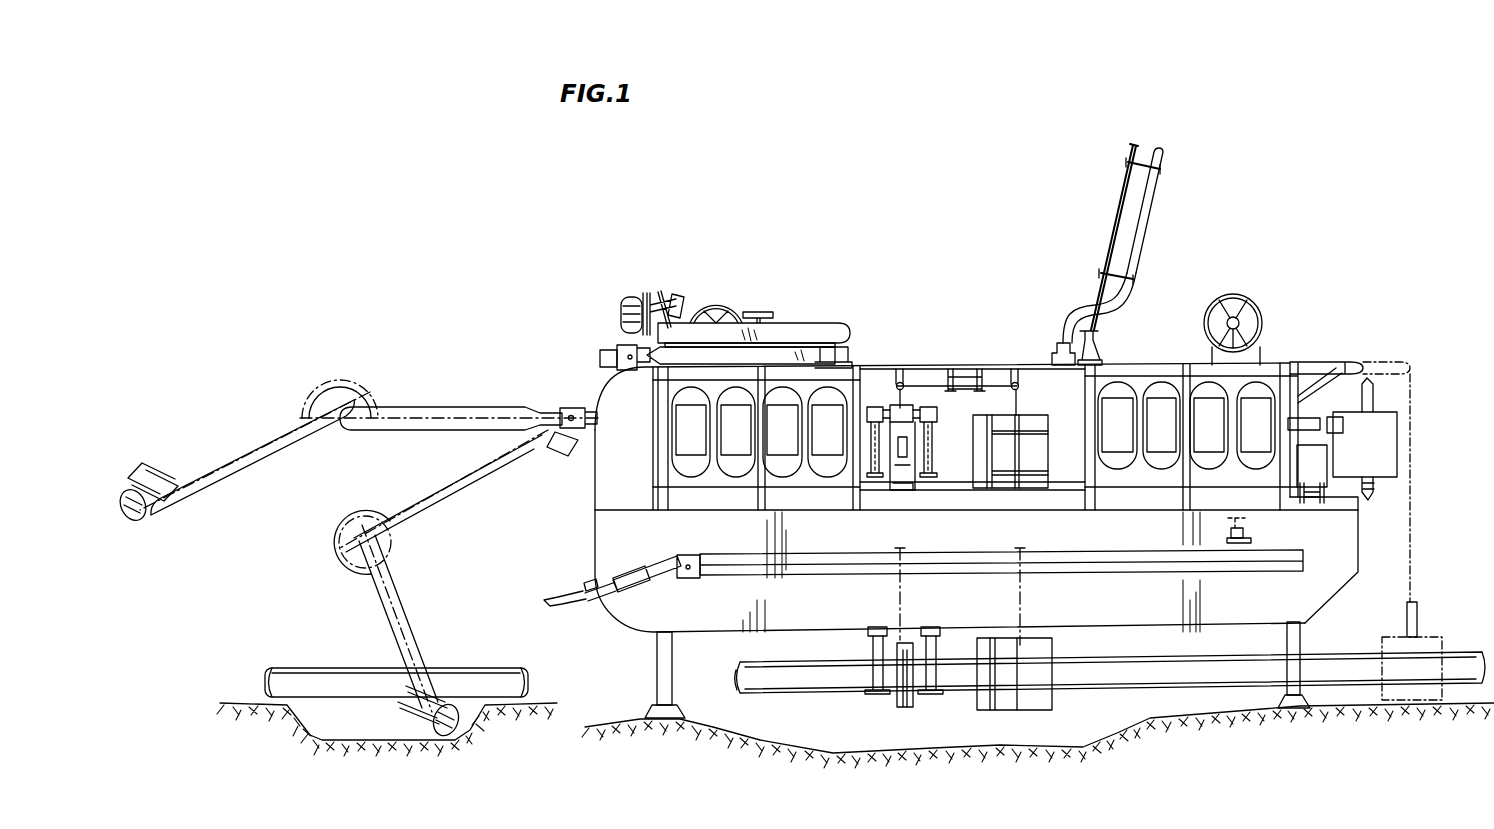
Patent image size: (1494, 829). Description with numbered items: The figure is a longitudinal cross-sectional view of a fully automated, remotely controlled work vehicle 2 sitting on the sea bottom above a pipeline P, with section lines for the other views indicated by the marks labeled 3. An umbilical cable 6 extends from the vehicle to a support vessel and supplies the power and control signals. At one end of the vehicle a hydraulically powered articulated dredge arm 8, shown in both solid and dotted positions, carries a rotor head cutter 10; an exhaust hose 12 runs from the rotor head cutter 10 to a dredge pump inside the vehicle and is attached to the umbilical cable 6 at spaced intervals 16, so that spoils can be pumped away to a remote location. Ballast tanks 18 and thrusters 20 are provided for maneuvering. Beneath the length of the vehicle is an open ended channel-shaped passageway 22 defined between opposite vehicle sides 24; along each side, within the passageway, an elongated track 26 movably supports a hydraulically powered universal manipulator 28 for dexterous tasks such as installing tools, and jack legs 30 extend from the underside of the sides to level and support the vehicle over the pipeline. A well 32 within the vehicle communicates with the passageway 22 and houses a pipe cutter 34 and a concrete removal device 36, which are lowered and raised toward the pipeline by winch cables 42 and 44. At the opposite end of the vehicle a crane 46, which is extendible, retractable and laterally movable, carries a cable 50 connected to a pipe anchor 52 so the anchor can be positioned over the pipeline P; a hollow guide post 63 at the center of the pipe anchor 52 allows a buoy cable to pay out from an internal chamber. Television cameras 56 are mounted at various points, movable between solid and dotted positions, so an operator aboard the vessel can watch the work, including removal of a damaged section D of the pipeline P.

The work vehicle 2 is at (135, 192).
The section line 3- 3 is at (502, 243).
The umbilical cable 6 is at (1110, 197).
The articulated dredge arm 8 is at (830, 322).
The rotor head cutter 10 is at (644, 280).
The exhaust hose 12 is at (352, 388).
The attachment points 16 is at (1143, 160).
The ballast tanks 18 is at (680, 440).
The thrusters 20 is at (718, 302).
The channel-shaped passageway 22 is at (646, 619).
The vehicle sides 24 is at (1325, 600).
The elongated track 26 is at (1163, 556).
The universal manipulator 28 is at (618, 566).
The jack legs 30 is at (655, 686).
The well 32 is at (1093, 490).
The pipe cutter 34 is at (875, 498).
The concrete removal device 36 is at (1033, 493).
The cable 42 is at (918, 368).
The cable 44 is at (1000, 368).
The crane 46 is at (1322, 358).
The cable 50 is at (1370, 360).
The pipe anchor 52 is at (1385, 432).
The television cameras 56 is at (770, 312).
The guide post 63 is at (1418, 605).
The pipeline P is at (310, 663).
The damaged section D is at (1181, 695).